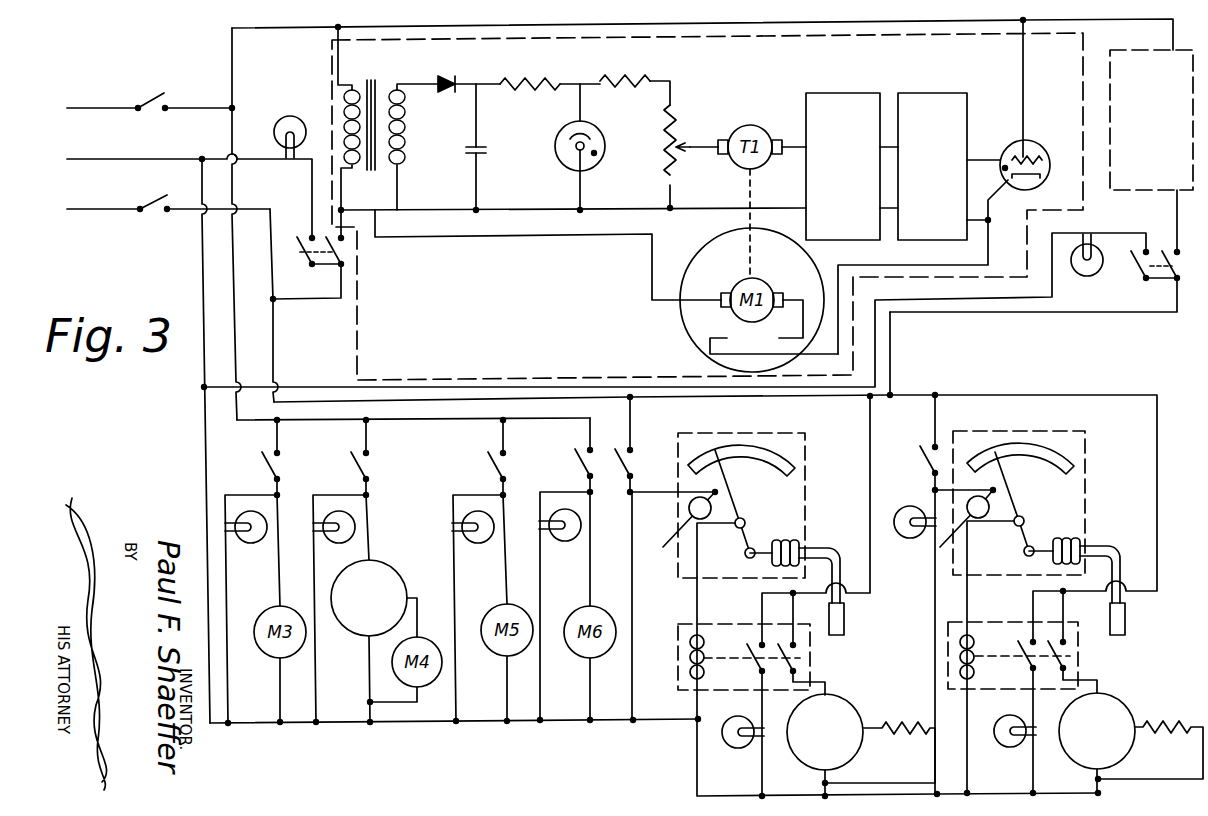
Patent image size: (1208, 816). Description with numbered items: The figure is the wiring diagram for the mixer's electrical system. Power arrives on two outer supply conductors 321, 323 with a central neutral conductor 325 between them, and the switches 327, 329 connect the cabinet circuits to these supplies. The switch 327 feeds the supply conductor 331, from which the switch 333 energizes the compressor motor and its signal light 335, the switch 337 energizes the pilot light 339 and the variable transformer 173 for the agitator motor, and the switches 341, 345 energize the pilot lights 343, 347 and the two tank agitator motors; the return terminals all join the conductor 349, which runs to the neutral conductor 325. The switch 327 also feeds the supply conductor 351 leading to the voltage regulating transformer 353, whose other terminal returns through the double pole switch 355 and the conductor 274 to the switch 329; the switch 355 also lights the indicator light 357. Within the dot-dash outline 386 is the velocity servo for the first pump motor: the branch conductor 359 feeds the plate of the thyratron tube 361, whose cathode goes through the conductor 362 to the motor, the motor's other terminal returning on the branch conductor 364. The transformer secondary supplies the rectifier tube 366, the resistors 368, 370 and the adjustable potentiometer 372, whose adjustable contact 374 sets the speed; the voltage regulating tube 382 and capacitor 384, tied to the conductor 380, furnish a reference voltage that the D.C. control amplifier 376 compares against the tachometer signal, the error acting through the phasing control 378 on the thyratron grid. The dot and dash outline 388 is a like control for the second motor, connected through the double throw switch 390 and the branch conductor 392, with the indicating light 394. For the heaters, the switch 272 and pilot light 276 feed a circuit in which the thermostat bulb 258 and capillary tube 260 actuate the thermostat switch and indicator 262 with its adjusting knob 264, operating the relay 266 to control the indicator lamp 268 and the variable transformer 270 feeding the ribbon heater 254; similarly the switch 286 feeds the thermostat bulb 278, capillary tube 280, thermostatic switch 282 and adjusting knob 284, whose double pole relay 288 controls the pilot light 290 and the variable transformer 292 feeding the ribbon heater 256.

The outer supply conductor 321 is at (92, 108).
The switch 327 is at (160, 92).
The central neutral conductor 325 is at (118, 159).
The outer supply conductor 323 is at (126, 209).
The switch 329 is at (153, 203).
The supply conductor 351 is at (306, 30).
The indicator light 357 is at (270, 125).
The voltage regulating transformer 353 is at (375, 80).
The double pole switch 355 is at (328, 248).
The rectifier tube 366 is at (452, 72).
The resistor 368 is at (530, 78).
The resistor 370 is at (625, 75).
The adjustable potentiometer 372 is at (676, 130).
The adjustable contact 374 is at (690, 150).
The D.C. control amplifier 376 is at (816, 98).
The phasing control 378 is at (925, 103).
The branch conductor 359 is at (1022, 68).
The thyratron tube 361 is at (1038, 146).
The capacitor 384 is at (482, 146).
The voltage regulating tube 382 is at (568, 168).
The conductor 380 is at (665, 209).
The branch conductor 364 is at (572, 238).
The conductor 362 is at (917, 265).
The dot-dash outline 386 is at (360, 318).
The conductor 274 is at (274, 348).
The dot and dash outline 388 is at (1118, 192).
The indicating light 394 is at (1104, 262).
The branch conductor 392 is at (1012, 313).
The double throw switch 390 is at (1178, 268).
The supply conductor 331 is at (393, 420).
The switch 333 is at (272, 470).
The switch 337 is at (360, 468).
The switch 341 is at (498, 465).
The switch 345 is at (580, 465).
The switch 286 is at (632, 462).
The adjustable thermostatic switch and indicator 282 is at (808, 488).
The switch 272 is at (924, 460).
The adjustable thermostat switch and indicator 262 is at (1088, 494).
The pilot light 276 is at (892, 492).
The capillary tube 280 is at (818, 548).
The capillary tube 260 is at (1105, 548).
The signal light 335 is at (258, 543).
The pilot light 339 is at (352, 542).
The variable transformer 173 is at (385, 562).
The pilot light 343 is at (482, 543).
The pilot light 347 is at (572, 541).
The adjusting knob 284 is at (677, 535).
The adjusting knob 264 is at (940, 529).
The double pole relay 288 is at (722, 645).
The thermostat bulb 278 is at (846, 620).
The relay 266 is at (992, 643).
The thermostat bulb 258 is at (1126, 620).
The variable transformer 292 is at (840, 706).
The ribbon heater 256 is at (896, 722).
The variable transformer 270 is at (1113, 698).
The ribbon electric heater 254 is at (1157, 722).
The pilot light 290 is at (728, 742).
The indicator lamp 268 is at (1002, 742).
The conductor 349 is at (487, 722).